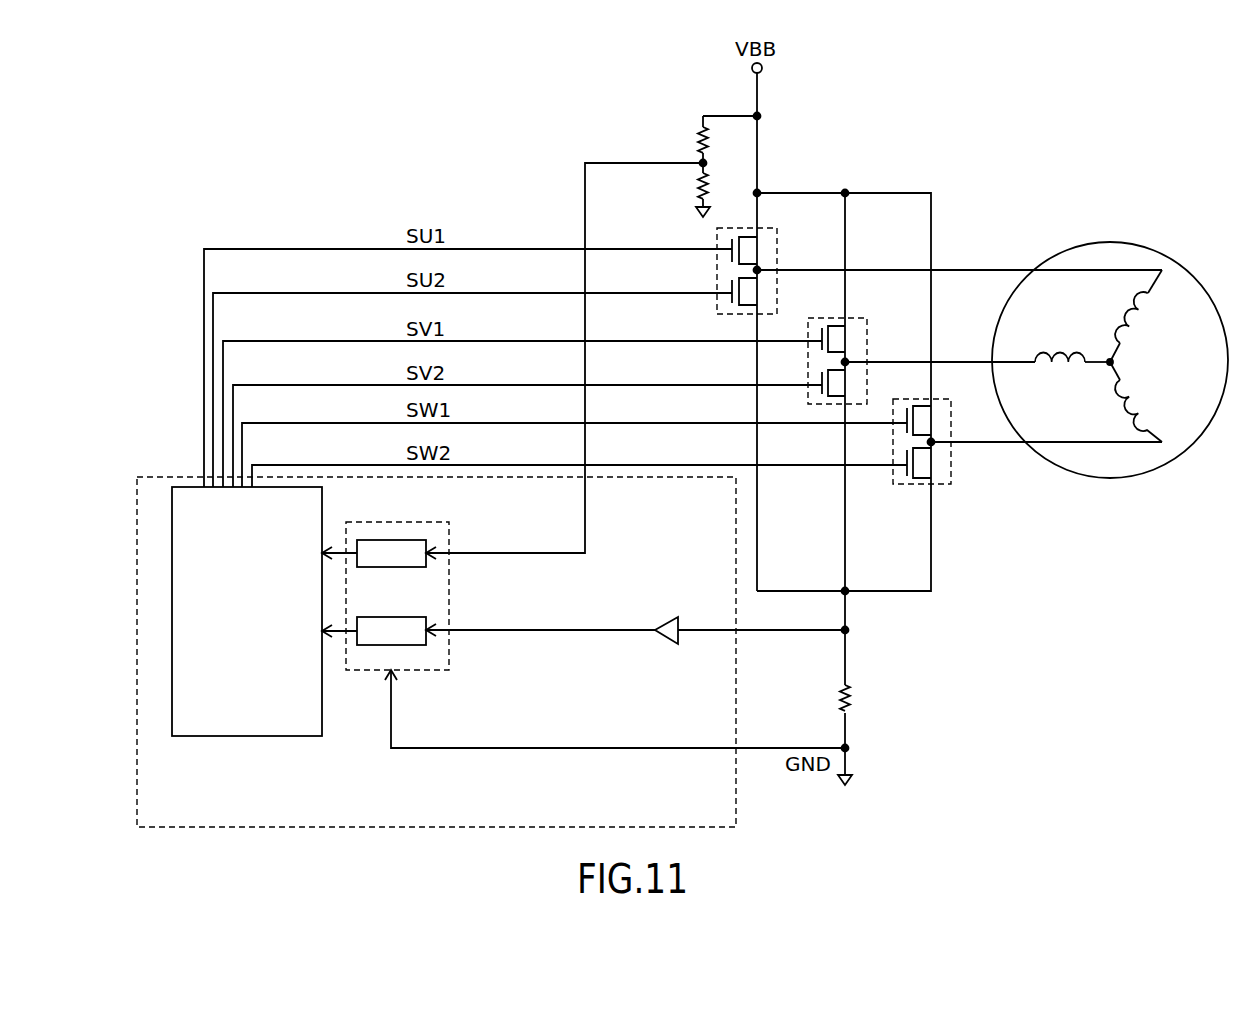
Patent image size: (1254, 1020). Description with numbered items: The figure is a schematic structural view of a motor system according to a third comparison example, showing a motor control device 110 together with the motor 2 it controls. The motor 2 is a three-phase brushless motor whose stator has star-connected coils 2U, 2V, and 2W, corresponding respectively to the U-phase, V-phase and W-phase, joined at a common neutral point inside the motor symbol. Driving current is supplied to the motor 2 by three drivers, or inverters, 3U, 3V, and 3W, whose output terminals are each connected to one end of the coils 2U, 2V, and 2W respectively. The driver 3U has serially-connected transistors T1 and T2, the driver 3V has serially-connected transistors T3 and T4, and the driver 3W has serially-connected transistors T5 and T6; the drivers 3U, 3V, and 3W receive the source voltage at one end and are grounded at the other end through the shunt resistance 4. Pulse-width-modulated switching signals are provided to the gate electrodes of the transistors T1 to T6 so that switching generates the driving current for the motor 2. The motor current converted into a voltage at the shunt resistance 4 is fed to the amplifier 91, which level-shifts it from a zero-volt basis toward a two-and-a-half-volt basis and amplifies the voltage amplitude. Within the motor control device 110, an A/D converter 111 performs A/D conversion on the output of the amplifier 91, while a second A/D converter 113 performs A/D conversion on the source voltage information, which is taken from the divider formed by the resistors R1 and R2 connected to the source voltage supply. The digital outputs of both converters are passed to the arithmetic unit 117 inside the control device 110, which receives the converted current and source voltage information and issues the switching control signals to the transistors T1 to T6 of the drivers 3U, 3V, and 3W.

The motor 2 is at (1110, 343).
The coil 2U is at (1144, 316).
The coil 2V is at (1072, 339).
The coil 2W is at (1116, 402).
The driver 3U is at (749, 270).
The driver 3V is at (861, 345).
The driver 3W is at (944, 474).
The transistor T1 is at (728, 258).
The transistor T2 is at (728, 299).
The transistor T3 is at (852, 337).
The transistor T4 is at (852, 382).
The transistor T5 is at (932, 419).
The transistor T6 is at (932, 462).
The resistor R1 is at (721, 141).
The resistor R2 is at (720, 190).
The shunt resistance 4 is at (855, 699).
The amplifier 91 is at (669, 618).
The motor control device 110 is at (736, 812).
The A/D converter 111 is at (410, 617).
The A/D converter 113 is at (410, 540).
The arithmetic unit 117 is at (236, 737).